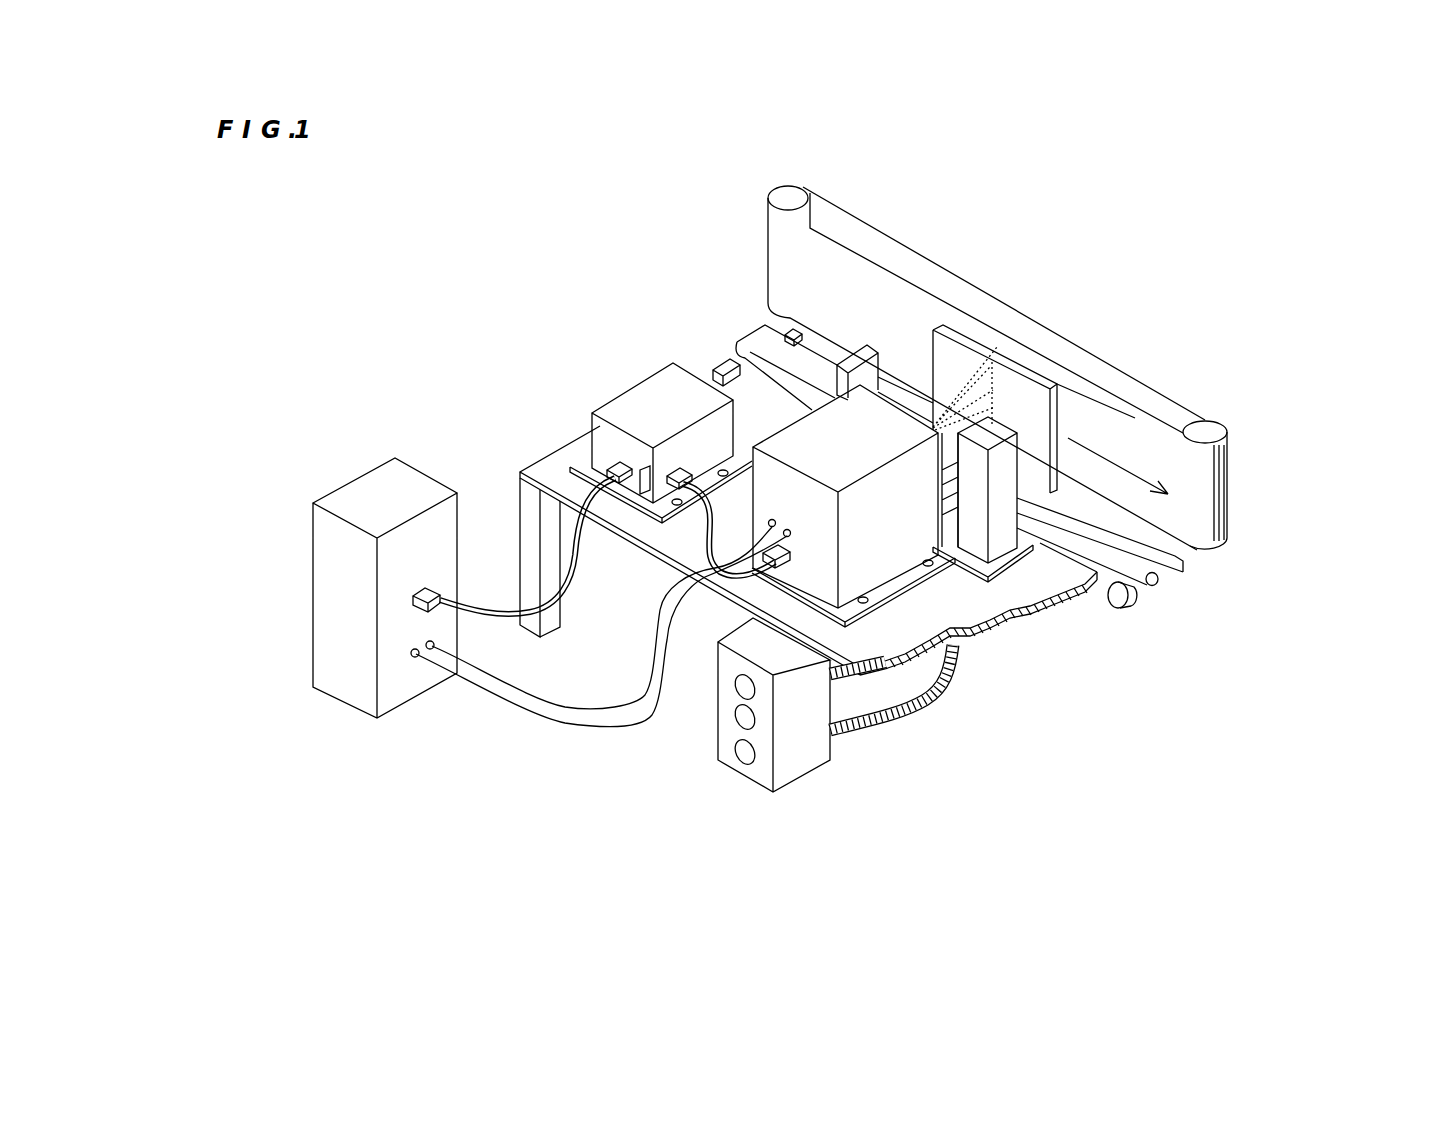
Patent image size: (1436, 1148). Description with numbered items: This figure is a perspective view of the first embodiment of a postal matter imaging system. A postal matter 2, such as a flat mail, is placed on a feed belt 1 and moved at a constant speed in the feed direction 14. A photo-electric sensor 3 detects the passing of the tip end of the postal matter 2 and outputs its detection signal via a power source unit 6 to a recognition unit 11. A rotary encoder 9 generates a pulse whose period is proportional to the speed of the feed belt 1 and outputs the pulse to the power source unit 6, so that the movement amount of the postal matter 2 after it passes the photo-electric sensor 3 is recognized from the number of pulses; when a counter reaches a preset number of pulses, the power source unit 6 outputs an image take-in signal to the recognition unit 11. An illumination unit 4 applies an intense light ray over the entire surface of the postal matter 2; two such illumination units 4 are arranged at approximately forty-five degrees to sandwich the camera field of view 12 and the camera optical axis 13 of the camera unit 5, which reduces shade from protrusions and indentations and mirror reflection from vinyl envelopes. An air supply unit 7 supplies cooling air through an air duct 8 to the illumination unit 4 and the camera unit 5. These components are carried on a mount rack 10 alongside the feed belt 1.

The feed belt 1 is at (760, 222).
The postal matter 2 is at (940, 358).
The photo-electric sensor 3 is at (717, 358).
The illumination unit 4 is at (857, 353).
The camera unit 5 is at (873, 553).
The power source unit 6 is at (622, 407).
The air supply unit 7 is at (733, 765).
The air duct 8 is at (877, 715).
The rotary encoder 9 is at (1132, 602).
The mount rack 10 is at (540, 468).
The recognition unit 11 is at (360, 703).
The camera field of view 12 is at (993, 393).
The camera optical axis 13 is at (1000, 348).
The feed direction 14 is at (1133, 472).